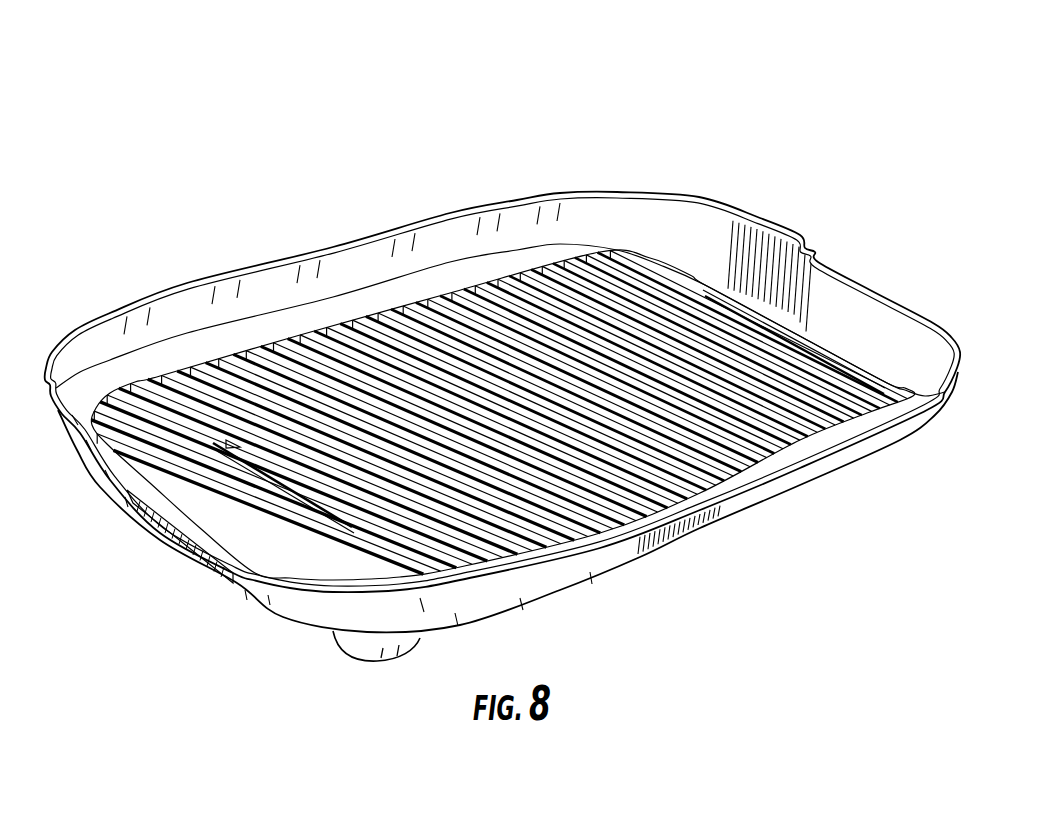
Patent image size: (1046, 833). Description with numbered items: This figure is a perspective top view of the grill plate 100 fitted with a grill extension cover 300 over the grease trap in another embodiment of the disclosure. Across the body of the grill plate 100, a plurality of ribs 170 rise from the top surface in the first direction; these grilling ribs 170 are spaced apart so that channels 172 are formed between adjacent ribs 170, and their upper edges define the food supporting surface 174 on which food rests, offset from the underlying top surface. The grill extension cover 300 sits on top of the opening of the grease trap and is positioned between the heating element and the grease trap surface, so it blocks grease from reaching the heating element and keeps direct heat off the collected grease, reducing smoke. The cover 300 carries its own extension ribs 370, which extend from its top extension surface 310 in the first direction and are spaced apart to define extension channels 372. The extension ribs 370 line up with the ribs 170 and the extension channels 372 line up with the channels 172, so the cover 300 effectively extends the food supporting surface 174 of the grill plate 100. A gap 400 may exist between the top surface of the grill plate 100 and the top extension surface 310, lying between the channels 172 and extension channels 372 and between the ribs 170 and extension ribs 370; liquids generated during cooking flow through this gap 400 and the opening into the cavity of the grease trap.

The grill plate 100 is at (262, 110).
The ribs 170 is at (713, 297).
The channels 172 is at (823, 357).
The food supporting surface 174 is at (125, 390).
The grill extension cover 300 is at (363, 313).
The top extension surface 310 is at (567, 257).
The extension ribs 370 is at (220, 357).
The extension channels 372 is at (297, 338).
The gap 400 is at (453, 303).